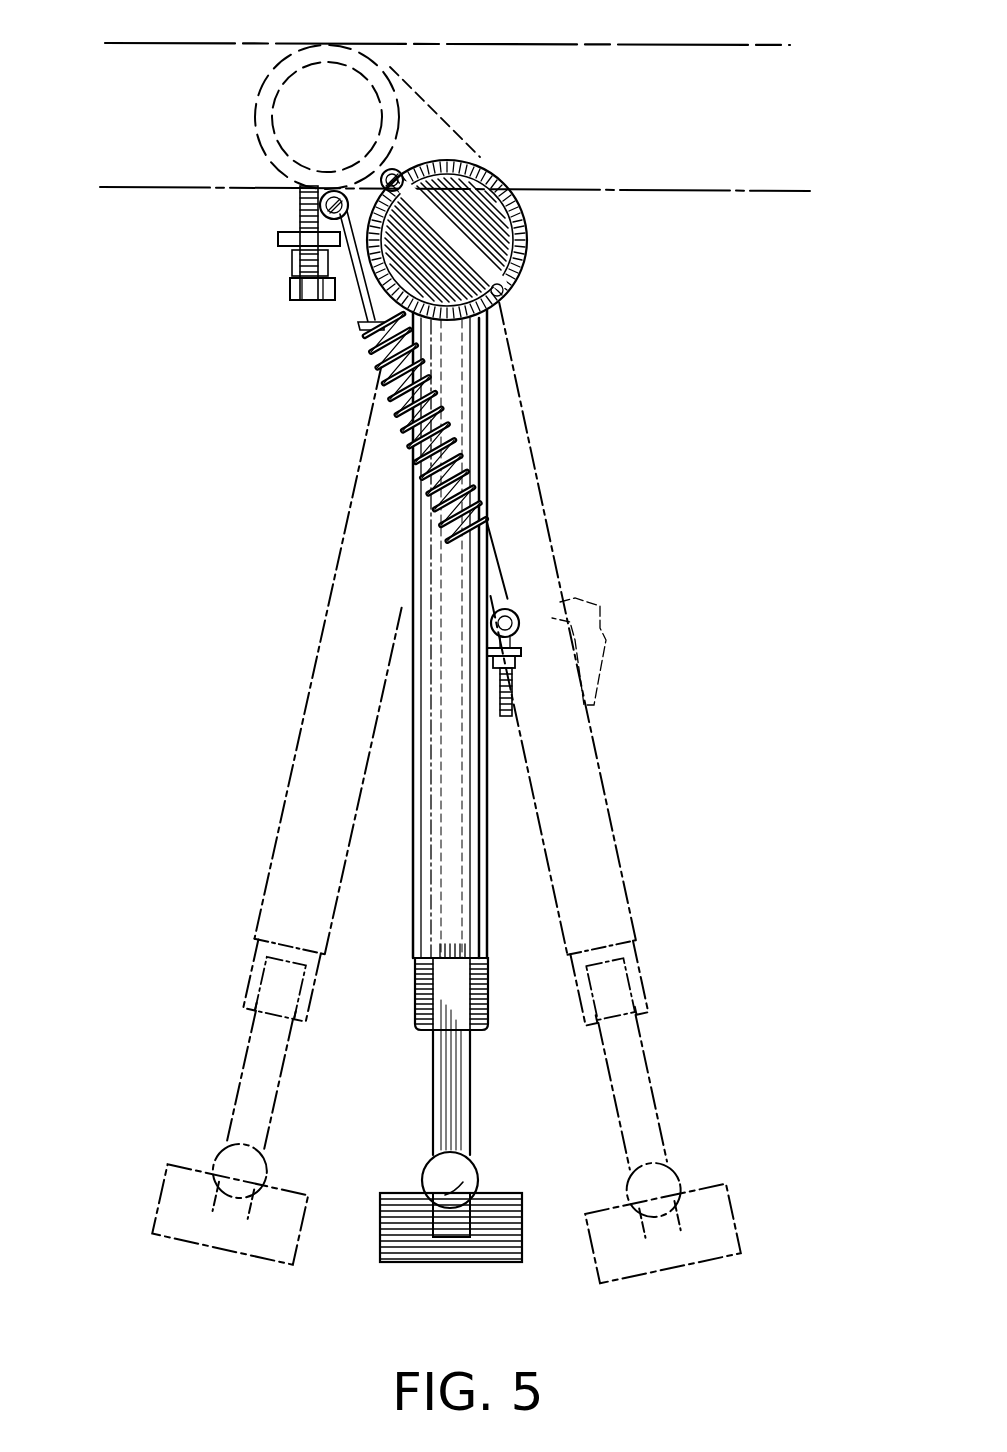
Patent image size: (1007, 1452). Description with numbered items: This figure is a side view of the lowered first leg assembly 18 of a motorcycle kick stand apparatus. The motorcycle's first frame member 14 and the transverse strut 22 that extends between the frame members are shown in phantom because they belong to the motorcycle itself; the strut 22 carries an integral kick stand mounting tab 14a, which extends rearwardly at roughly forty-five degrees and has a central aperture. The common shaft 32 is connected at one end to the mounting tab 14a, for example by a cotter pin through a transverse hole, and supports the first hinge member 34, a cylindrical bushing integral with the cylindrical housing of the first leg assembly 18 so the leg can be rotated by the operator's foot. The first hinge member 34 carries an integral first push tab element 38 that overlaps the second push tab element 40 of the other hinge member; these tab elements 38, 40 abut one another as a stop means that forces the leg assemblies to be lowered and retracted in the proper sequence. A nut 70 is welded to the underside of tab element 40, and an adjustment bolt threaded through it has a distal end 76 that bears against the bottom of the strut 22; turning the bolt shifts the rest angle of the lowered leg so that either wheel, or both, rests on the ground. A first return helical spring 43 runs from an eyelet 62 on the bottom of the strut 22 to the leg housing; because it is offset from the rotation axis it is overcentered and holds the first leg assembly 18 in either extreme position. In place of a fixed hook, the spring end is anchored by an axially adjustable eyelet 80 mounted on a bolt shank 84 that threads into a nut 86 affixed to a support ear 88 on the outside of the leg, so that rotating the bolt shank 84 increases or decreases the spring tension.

The first frame member 14 is at (630, 113).
The kick stand mounting tab 14a is at (433, 130).
The first leg assembly 18 is at (535, 502).
The transverse strut 22 is at (267, 80).
The common shaft 32 is at (545, 212).
The first hinge member 34 is at (528, 290).
The first push tab element 38 is at (368, 345).
The second push tab element 40 is at (278, 232).
The first return helical spring 43 is at (412, 450).
The eyelet 62 is at (287, 187).
The nut 70 is at (285, 250).
The distal end 76 is at (318, 188).
The axially adjustable eyelet 80 is at (522, 620).
The bolt shank 84 is at (513, 705).
The nut 86 is at (520, 664).
The support ear 88 is at (527, 655).